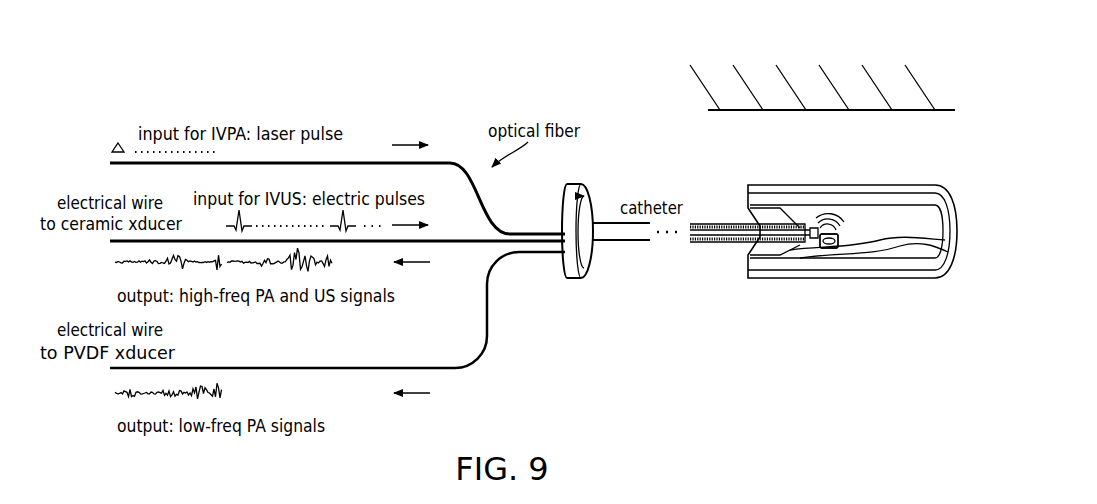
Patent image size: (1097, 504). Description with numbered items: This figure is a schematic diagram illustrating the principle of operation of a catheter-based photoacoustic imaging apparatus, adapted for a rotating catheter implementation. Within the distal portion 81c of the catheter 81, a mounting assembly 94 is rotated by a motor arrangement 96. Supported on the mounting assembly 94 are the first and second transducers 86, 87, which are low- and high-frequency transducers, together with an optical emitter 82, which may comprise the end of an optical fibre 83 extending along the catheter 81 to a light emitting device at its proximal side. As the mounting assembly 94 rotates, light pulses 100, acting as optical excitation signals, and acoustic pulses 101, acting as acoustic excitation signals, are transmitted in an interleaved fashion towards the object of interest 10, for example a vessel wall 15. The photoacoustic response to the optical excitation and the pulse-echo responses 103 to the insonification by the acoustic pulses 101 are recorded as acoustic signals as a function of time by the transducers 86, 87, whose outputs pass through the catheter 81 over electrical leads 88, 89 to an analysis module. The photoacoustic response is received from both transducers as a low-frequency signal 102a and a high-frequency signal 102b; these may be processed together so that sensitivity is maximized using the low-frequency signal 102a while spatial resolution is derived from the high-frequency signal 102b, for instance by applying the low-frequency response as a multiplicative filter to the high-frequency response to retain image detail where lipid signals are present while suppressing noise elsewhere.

The object of interest 10 is at (806, 66).
The vessel wall 15 is at (760, 112).
The catheter 81 is at (900, 280).
The distal portion of the catheter 81c is at (832, 186).
The optical emitter 82 is at (806, 228).
The optical fibre 83 is at (466, 158).
The first transducer 86 is at (832, 249).
The second transducer 87 is at (829, 241).
The electrical lead 88 is at (487, 352).
The electrical lead 89 is at (445, 243).
The mounting assembly 94 is at (790, 256).
The motor arrangement 96 is at (580, 283).
The light pulses 100 is at (118, 142).
The acoustic pulses 101 is at (232, 208).
The low-frequency photoacoustic response signal 102a is at (222, 390).
The high-frequency photoacoustic response signal 102b is at (190, 268).
The pulse-echo responses 103 is at (294, 268).